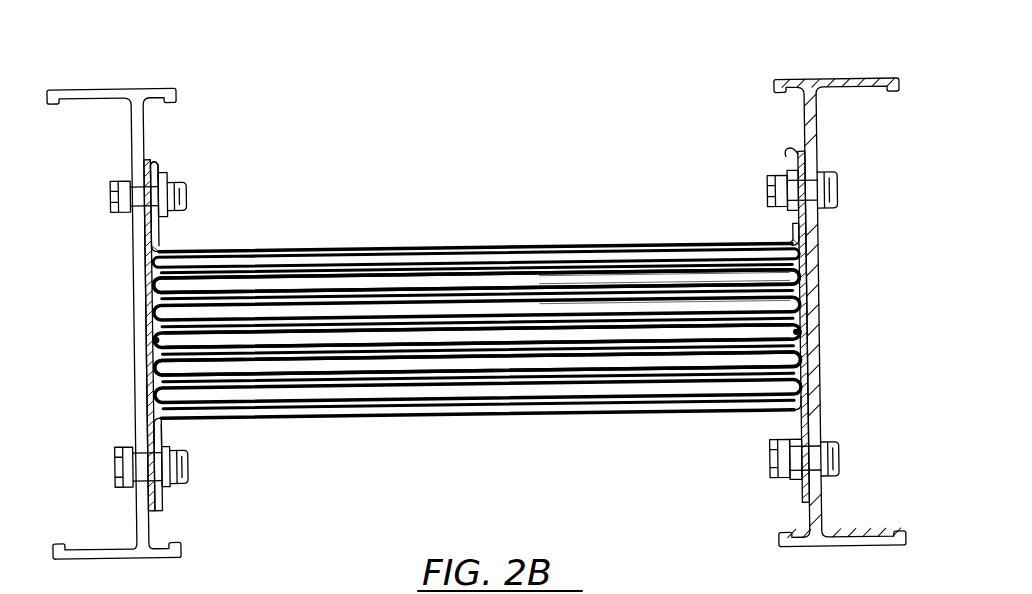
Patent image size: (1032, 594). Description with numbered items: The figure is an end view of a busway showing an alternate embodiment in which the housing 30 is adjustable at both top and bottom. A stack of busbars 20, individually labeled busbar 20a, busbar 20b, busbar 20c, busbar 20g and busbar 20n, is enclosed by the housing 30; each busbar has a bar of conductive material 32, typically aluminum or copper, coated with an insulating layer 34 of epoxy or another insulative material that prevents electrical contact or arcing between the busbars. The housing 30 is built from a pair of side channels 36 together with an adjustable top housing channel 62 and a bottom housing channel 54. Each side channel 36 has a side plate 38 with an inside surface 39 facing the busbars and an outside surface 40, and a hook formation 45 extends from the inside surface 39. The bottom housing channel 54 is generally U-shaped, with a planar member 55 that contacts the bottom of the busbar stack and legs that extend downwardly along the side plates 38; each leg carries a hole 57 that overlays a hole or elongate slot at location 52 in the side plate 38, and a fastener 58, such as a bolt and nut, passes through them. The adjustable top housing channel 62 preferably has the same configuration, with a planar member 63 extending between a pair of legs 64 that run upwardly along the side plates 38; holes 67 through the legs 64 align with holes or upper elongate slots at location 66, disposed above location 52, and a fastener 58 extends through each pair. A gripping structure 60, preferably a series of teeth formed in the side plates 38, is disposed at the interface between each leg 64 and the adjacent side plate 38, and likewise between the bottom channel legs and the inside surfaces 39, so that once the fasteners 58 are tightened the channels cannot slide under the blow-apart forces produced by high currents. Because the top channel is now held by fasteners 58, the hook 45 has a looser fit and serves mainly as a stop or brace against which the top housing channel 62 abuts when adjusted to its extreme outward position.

The busbar 20 is at (665, 393).
The busbar 20a is at (804, 285).
The busbar 20b is at (630, 298).
The busbar 20c is at (682, 330).
The busbar 20g is at (809, 255).
The busbar 20n is at (804, 370).
The busway housing 30 is at (552, 68).
The bar of conductive material 32 is at (575, 376).
The insulating layer 34 is at (560, 270).
The side channel 36 is at (128, 87).
The side plate 38 is at (148, 306).
The inside surface 39 is at (152, 339).
The outside surface 40 is at (140, 352).
The hook formation 45 is at (795, 150).
The holes or elongate slots location 52 is at (140, 420).
The bottom housing channel 54 is at (405, 418).
The planar member 55 is at (450, 418).
The hole 57 is at (118, 446).
The fastener 58 is at (170, 184).
The gripping structure 60 is at (142, 223).
The adjustable top housing channel 62 is at (412, 246).
The planar member 63 is at (463, 251).
The leg 64 is at (158, 158).
The holes or elongate slots location 66 is at (140, 246).
The hole 67 is at (186, 193).